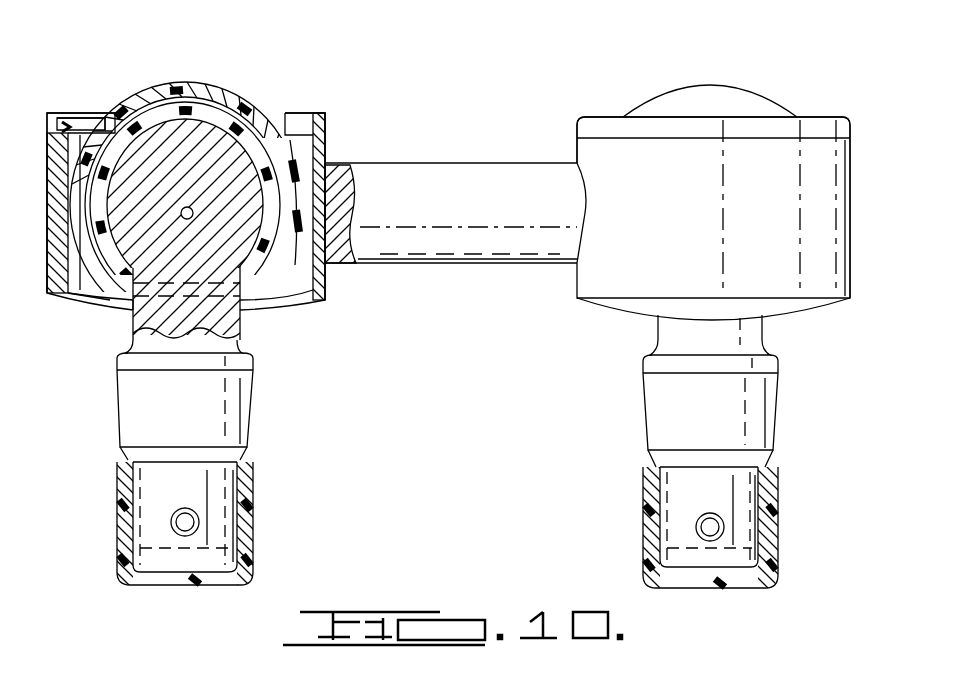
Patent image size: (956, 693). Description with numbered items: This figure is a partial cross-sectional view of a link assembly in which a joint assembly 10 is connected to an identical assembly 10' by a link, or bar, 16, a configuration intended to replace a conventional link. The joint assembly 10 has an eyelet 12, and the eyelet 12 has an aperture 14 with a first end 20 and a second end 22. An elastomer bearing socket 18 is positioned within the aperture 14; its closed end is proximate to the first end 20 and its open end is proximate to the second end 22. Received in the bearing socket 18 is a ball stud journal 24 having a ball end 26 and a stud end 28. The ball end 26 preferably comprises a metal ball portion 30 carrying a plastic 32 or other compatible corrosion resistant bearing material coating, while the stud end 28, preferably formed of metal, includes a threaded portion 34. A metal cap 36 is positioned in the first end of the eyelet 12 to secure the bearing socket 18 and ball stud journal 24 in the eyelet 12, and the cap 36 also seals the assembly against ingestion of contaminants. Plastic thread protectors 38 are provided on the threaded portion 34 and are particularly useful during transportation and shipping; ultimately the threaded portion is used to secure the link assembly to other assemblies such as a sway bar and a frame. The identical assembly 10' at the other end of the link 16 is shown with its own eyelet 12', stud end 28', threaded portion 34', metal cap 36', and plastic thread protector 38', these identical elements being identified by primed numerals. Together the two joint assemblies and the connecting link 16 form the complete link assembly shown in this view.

The joint assembly 10 is at (186, 154).
The eyelet 12 is at (177, 229).
The aperture 14 is at (100, 282).
The link 16 is at (424, 266).
The elastomer bearing socket 18 is at (70, 128).
The first end 20 is at (87, 112).
The second end 22 is at (114, 304).
The ball stud journal 24 is at (255, 286).
The ball end 26 is at (219, 107).
The stud end 28 is at (153, 403).
The metal ball portion 30 is at (232, 147).
The plastic coating 32 is at (293, 151).
The threaded portion 34 is at (222, 513).
The metal cap 36 is at (185, 173).
The plastic thread protector 38 is at (217, 525).
The identical assembly 10' is at (713, 161).
The eyelet 12' is at (705, 239).
The stud end 28' is at (665, 391).
The threaded portion 34' is at (660, 514).
The metal cap 36' is at (720, 79).
The plastic thread protector 38' is at (670, 527).